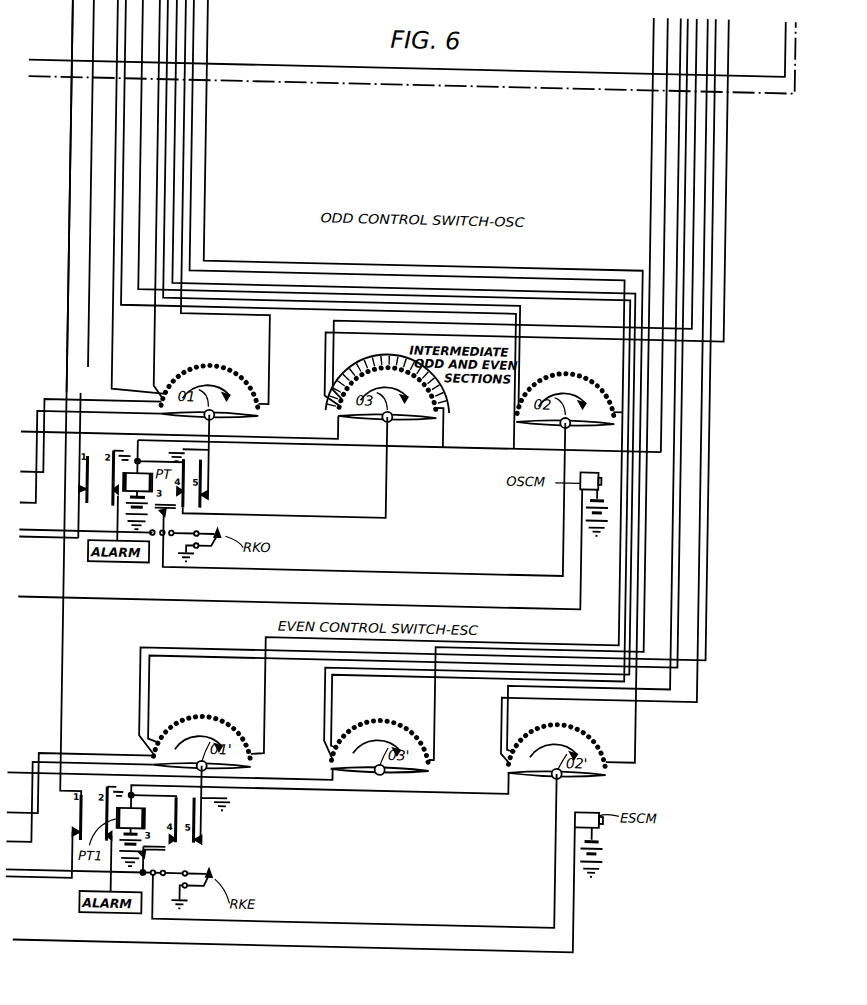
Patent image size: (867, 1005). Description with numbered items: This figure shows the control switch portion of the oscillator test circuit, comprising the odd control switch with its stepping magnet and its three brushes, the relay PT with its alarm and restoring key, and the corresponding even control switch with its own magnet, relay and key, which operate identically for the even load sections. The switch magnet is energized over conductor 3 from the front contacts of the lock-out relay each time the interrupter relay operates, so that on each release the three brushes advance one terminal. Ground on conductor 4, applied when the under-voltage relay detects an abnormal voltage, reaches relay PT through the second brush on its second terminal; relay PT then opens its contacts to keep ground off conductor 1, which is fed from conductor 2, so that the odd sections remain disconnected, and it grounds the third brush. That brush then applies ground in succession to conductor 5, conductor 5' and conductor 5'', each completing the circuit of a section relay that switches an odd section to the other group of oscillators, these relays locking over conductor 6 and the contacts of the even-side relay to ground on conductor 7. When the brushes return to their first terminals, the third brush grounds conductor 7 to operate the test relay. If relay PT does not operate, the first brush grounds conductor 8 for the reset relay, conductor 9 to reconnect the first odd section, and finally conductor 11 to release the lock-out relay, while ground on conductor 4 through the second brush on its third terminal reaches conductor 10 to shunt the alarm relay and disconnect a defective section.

The conductor 1 is at (85, 35).
The conductor 2 is at (30, 548).
The conductor 3 is at (114, 608).
The conductor 4 is at (54, 533).
The conductor 5 is at (542, 212).
The conductor 5' is at (549, 210).
The conductor 5'' is at (636, 234).
The conductor 6 is at (65, 110).
The conductor 7 is at (66, 402).
The conductor 8 is at (80, 402).
The conductor 9 is at (110, 366).
The conductor 10 is at (118, 313).
The conductor 11 is at (43, 408).